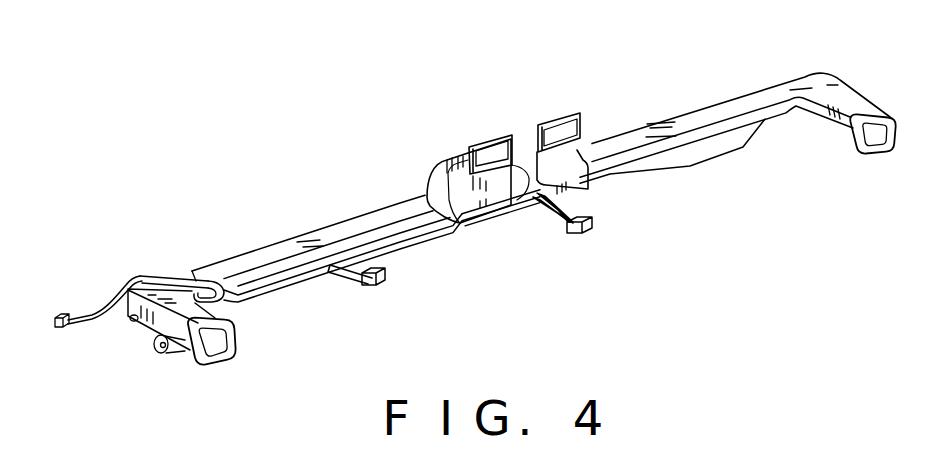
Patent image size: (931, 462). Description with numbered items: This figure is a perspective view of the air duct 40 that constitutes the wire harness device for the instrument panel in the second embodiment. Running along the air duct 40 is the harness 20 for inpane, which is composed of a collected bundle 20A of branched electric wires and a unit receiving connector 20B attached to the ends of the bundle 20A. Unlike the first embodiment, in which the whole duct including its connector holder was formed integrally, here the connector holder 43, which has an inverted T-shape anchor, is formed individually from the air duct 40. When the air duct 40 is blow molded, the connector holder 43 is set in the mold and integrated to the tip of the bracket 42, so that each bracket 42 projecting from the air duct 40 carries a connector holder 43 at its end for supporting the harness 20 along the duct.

The air duct 40 is at (670, 118).
The harness for inpane 20 is at (113, 281).
The collected bundle of branched electric wires 20A is at (157, 272).
The unit receiving connector 20B is at (58, 311).
The bracket 42 is at (339, 281).
The connector holder 43 is at (388, 286).